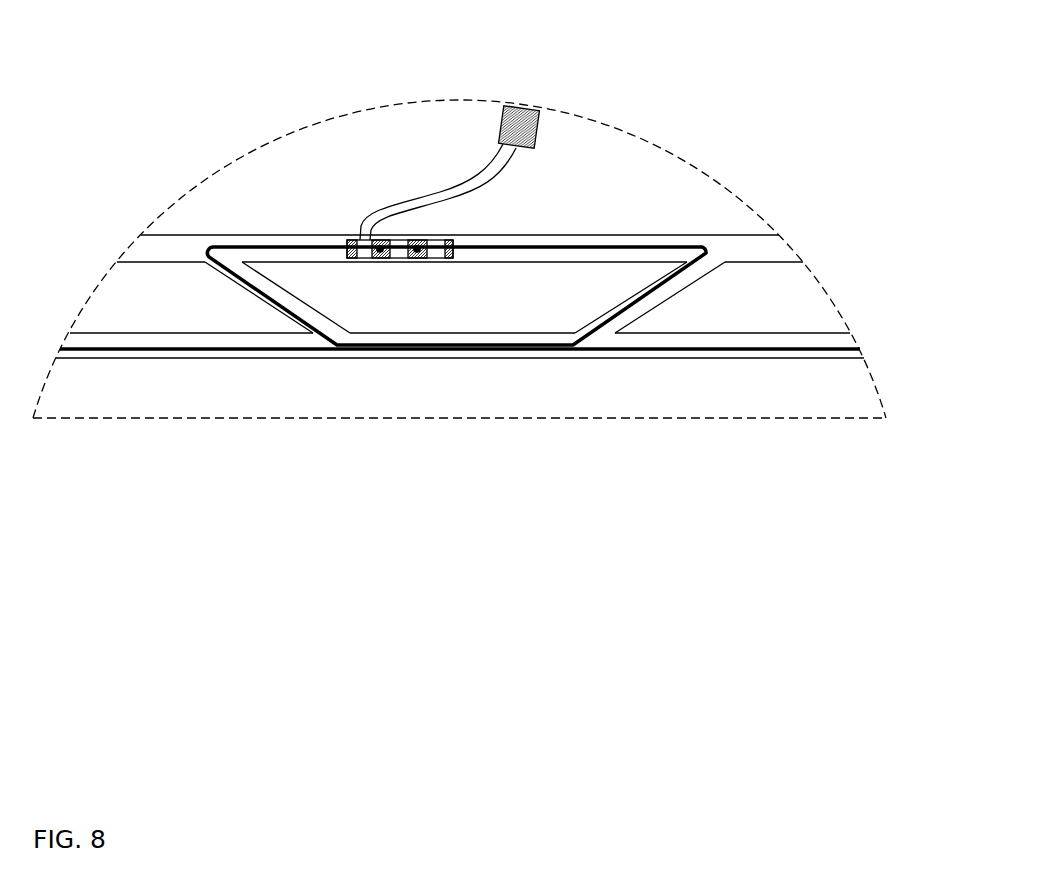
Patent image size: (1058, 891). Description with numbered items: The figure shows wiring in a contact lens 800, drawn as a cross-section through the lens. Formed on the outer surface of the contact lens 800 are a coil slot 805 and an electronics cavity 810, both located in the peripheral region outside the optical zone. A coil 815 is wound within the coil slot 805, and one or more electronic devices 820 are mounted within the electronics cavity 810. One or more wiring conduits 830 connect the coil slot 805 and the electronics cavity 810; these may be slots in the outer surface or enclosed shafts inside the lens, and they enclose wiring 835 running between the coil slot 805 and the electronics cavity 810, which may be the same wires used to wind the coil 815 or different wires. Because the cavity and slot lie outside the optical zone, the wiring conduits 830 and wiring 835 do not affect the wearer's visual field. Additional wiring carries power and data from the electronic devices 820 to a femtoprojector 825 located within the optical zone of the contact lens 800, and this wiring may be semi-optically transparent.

The contact lens 800 is at (277, 145).
The coil slot 805 is at (903, 345).
The electronics cavity 810 is at (816, 262).
The coil 815 is at (213, 353).
The electronic devices 820 is at (438, 245).
The femtoprojector 825 is at (533, 112).
The wiring conduit 830 is at (302, 298).
The wiring 835 is at (244, 277).